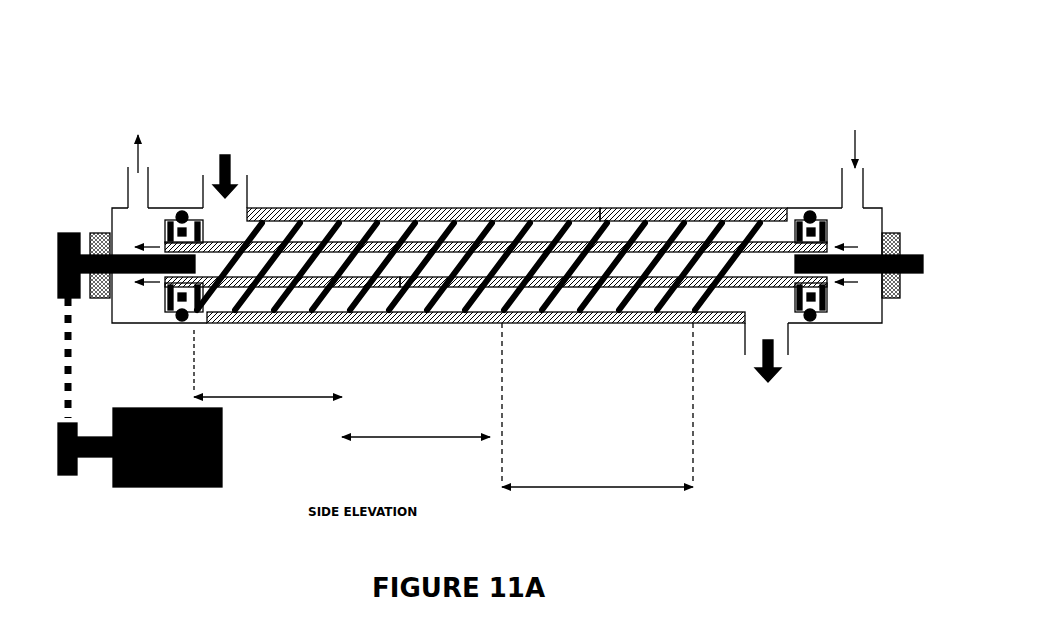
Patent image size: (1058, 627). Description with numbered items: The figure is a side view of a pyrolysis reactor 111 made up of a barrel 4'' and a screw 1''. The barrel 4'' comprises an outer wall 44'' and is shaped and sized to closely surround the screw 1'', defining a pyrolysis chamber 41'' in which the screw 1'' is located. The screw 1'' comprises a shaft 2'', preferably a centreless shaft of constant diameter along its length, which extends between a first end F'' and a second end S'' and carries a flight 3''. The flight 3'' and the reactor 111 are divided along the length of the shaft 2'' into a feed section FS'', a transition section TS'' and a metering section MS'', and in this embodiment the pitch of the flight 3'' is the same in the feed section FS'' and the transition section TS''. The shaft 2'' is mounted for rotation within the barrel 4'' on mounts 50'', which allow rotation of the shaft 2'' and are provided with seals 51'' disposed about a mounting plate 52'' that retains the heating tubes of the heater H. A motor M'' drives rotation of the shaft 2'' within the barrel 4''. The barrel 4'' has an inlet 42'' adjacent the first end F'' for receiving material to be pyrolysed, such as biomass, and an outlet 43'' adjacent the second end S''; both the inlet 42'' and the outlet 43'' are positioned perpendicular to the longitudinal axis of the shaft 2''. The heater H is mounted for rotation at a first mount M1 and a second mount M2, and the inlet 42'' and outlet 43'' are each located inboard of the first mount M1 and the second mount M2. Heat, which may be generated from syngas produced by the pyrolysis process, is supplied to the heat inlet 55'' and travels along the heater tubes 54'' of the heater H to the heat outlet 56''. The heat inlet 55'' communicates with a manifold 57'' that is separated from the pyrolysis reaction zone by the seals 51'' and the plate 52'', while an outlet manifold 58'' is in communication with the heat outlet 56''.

The pyrolysis reactor 111 is at (790, 70).
The screw 1'' is at (613, 213).
The shaft 2'' is at (282, 215).
The flight 3'' is at (476, 213).
The barrel 4'' is at (693, 153).
The pyrolysis chamber 41'' is at (423, 167).
The inlet 42'' is at (234, 110).
The outlet 43'' is at (802, 406).
The outer wall 44'' is at (254, 204).
The mounts 50'' is at (531, 252).
The seals 51'' is at (834, 209).
The mounting plate 52'' is at (879, 325).
The heater tubes 54'' is at (496, 191).
The heat inlet 55'' is at (878, 143).
The heat outlet 56'' is at (101, 129).
The manifold 57'' is at (858, 246).
The outlet manifold 58'' is at (141, 246).
The heater H is at (400, 233).
The second end S'' is at (851, 204).
The first end F'' is at (167, 310).
The first mount M1 is at (92, 233).
The second mount M2 is at (900, 233).
The motor M'' is at (140, 447).
The feed section FS'' is at (268, 364).
The transition section TS'' is at (416, 416).
The metering section MS'' is at (597, 405).